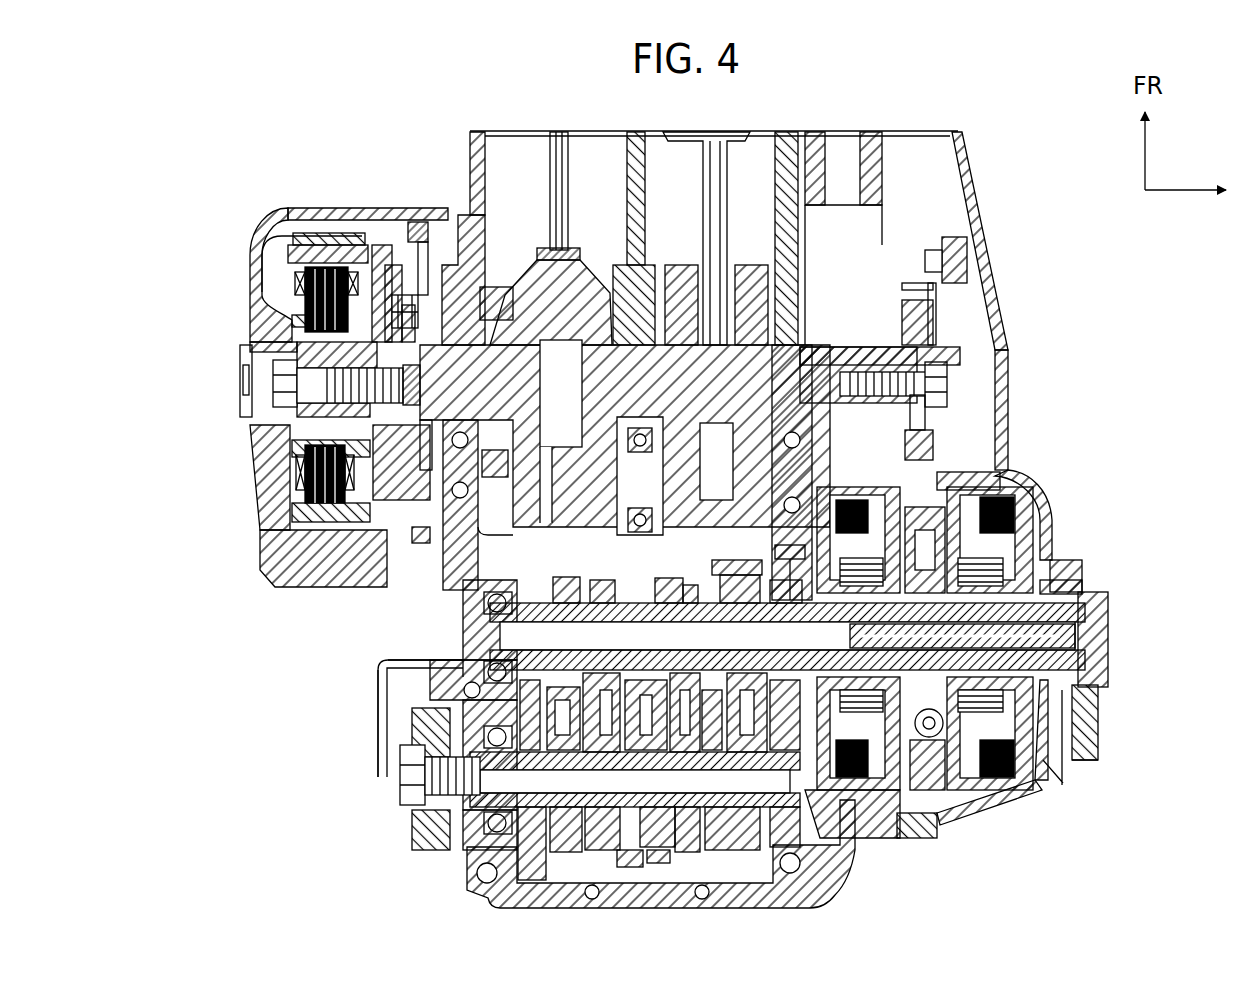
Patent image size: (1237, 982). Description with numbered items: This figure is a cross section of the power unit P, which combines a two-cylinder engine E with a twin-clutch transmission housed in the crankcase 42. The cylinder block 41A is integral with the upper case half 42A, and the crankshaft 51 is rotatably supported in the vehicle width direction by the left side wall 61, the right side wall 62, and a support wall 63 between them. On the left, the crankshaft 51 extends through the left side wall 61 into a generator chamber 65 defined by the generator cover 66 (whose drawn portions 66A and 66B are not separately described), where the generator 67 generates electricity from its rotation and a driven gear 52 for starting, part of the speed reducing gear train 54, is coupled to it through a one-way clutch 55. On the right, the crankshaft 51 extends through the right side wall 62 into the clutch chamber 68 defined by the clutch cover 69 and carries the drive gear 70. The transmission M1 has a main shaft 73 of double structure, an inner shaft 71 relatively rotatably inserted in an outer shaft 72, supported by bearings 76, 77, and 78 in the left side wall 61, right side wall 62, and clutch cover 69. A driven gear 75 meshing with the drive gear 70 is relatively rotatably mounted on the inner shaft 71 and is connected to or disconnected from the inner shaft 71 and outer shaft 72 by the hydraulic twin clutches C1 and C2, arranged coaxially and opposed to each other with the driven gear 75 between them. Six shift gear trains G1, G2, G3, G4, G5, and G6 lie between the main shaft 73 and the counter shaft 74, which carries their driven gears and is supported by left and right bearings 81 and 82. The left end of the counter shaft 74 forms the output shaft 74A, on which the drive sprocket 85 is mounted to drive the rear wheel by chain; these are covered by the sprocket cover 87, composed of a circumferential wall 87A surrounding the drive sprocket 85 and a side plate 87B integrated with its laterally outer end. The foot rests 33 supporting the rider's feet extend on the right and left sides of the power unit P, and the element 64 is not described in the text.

The engine E is at (992, 238).
The cylinder block 41A is at (472, 195).
The upper case half 42A is at (463, 207).
The support wall 63 is at (620, 262).
The right side wall 62 is at (782, 262).
The drive gear 70 is at (900, 307).
The crankshaft 51 is at (810, 348).
The clutch cover 69 is at (1010, 410).
The clutch chamber 68 is at (960, 488).
The bearing 78 is at (1058, 590).
The bearing 77 is at (817, 517).
The generator cover 66 is at (306, 208).
The housing side wall 66B is at (250, 457).
The housing bottom wall 66A is at (283, 575).
The generator chamber 65 is at (383, 228).
The generator 67 is at (330, 545).
The one-way clutch 55 is at (410, 290).
The left side wall 61 is at (460, 223).
The crankcase 42 is at (470, 563).
The driven gear 52 is at (473, 550).
The speed reducing gear train 54 is at (410, 535).
The foot rest 33 is at (467, 615).
The bearing 76 is at (447, 675).
The sprocket cover 87 is at (375, 755).
The circumferential wall 87A is at (407, 662).
The side plate 87B is at (383, 670).
The support plate 64 is at (440, 710).
The drive sprocket 85 is at (425, 843).
The left bearing 81 is at (470, 847).
The transmission M1 is at (590, 578).
The shift gear train G5 is at (548, 573).
The inner shaft 71 is at (610, 590).
The main shaft 73 is at (697, 590).
The shift gear train G6 is at (717, 552).
The outer shaft 72 is at (737, 587).
The counter shaft 74 is at (870, 795).
The output shaft 74A is at (410, 802).
The shift gear train G1 is at (520, 893).
The shift gear train G3 is at (611, 862).
The shift gear train G4 is at (679, 857).
The shift gear train G2 is at (777, 887).
The right bearing 82 is at (843, 835).
The power unit P is at (942, 828).
The driven gear 75 is at (943, 797).
The clutch C2 is at (903, 827).
The clutch C1 is at (1025, 758).